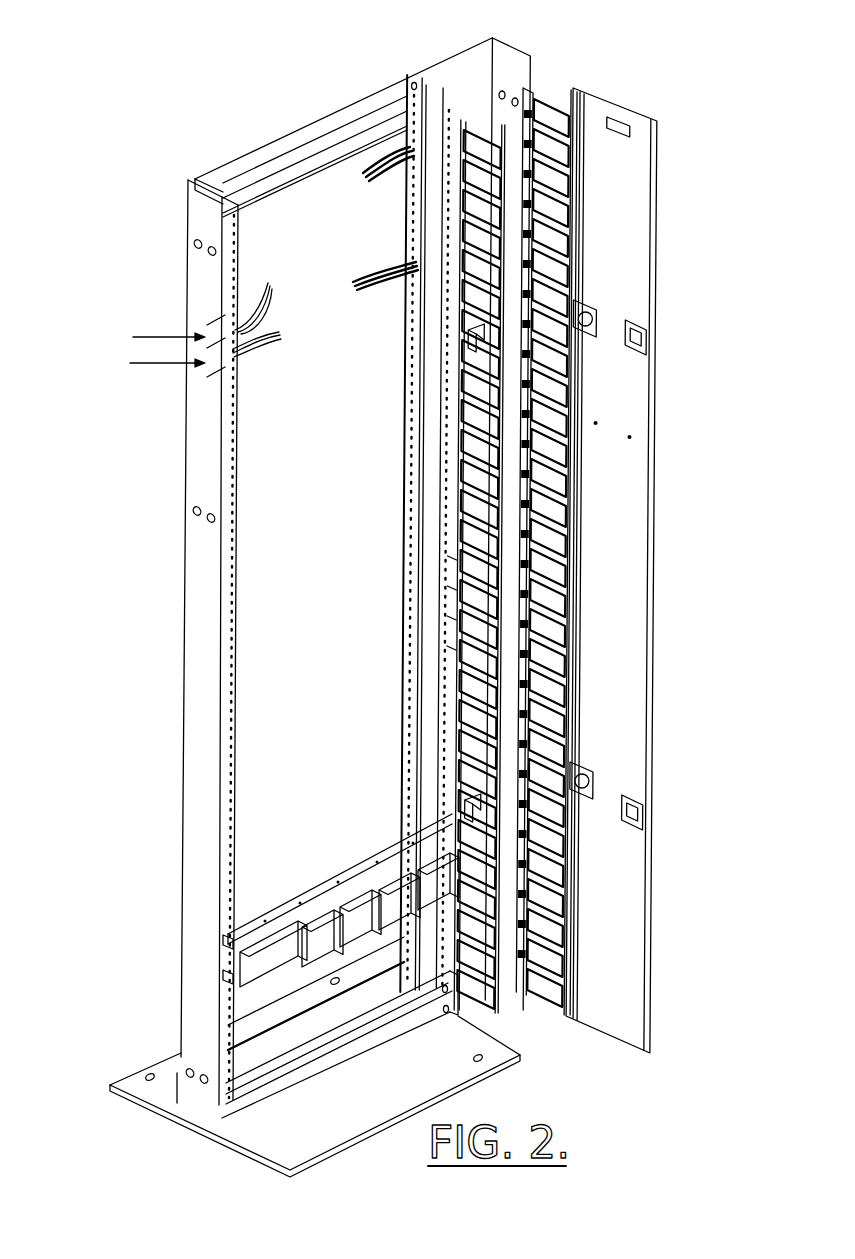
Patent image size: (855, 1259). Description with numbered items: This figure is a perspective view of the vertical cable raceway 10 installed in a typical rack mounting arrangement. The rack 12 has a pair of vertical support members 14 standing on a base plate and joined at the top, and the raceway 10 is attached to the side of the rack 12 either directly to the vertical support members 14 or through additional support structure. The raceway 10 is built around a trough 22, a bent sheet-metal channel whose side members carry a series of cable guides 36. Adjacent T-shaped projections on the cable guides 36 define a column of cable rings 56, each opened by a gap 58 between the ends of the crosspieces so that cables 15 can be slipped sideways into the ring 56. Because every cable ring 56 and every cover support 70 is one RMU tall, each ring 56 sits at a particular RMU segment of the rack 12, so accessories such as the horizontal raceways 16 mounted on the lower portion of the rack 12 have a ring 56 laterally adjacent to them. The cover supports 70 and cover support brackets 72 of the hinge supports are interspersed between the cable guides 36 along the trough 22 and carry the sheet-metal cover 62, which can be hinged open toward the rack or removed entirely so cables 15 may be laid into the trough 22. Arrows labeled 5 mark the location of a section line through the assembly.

The vertical cable raceway 10 is at (545, 1040).
The rack 12 is at (233, 130).
The vertical support members 14 is at (191, 722).
The cables 15 is at (238, 262).
The horizontal raceways 16 is at (262, 957).
The trough 22 is at (466, 62).
The cable guides 36 is at (462, 228).
The cable ring 56 is at (548, 113).
The gap 58 is at (458, 582).
The cover 62 is at (628, 617).
The cover support 70 is at (483, 333).
The cover support bracket 72 is at (547, 298).
The section line for FIG. 5 is at (582, 757).